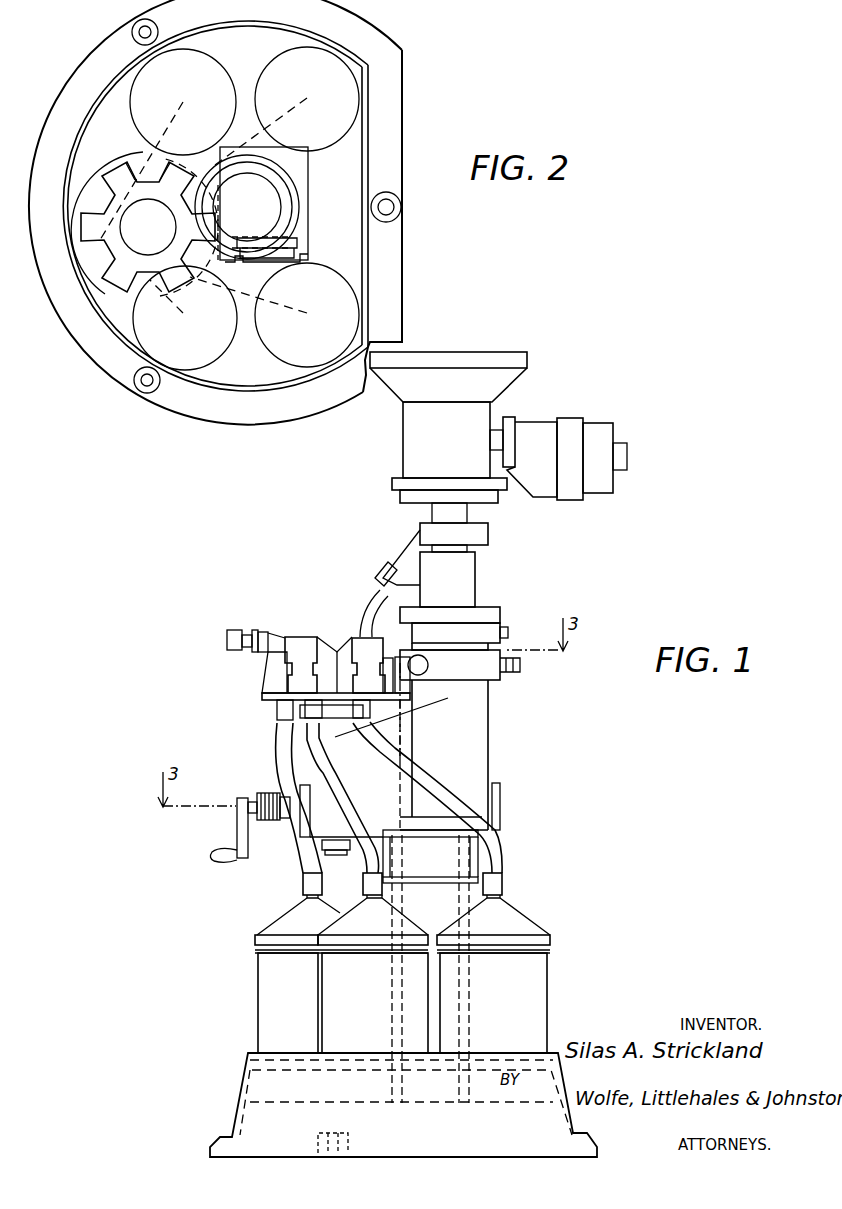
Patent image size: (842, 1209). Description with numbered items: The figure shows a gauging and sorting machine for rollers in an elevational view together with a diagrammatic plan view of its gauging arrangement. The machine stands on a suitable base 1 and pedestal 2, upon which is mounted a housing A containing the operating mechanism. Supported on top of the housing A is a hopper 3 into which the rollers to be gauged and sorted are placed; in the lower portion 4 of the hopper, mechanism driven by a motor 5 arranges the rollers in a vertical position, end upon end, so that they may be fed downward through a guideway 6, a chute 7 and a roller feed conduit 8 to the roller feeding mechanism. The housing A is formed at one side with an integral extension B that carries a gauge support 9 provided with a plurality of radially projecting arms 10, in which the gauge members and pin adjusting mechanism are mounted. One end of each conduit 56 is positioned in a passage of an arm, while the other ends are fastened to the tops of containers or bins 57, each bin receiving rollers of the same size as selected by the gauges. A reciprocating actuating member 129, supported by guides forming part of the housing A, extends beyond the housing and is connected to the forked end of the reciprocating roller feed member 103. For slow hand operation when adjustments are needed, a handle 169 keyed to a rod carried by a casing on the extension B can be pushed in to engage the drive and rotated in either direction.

In FIG. 2, the base 1 is at (385, 92).
In FIG. 1, the base 1 is at (265, 1087).
In FIG. 1, the pedestal 2 is at (445, 900).
In FIG. 1, the hopper 3 is at (440, 378).
In FIG. 1, the lower portion of the hopper 4 is at (415, 433).
In FIG. 1, the motor 5 is at (540, 435).
In FIG. 1, the guideway 6 is at (455, 512).
In FIG. 1, the chute 7 is at (412, 556).
In FIG. 1, the roller feed conduit 8 is at (362, 597).
In FIG. 2, the gauge support 9 is at (100, 247).
In FIG. 1, the gauge support 9 is at (322, 640).
In FIG. 2, the radially projecting arms 10 is at (147, 280).
In FIG. 1, the radially projecting arms 10 is at (286, 640).
In FIG. 2, the conduit 56 is at (283, 115).
In FIG. 1, the conduit 56 is at (290, 782).
In FIG. 2, the containers or bins 57 is at (313, 67).
In FIG. 1, the containers or bins 57 is at (333, 993).
In FIG. 1, the reciprocating roller feed member 103 is at (388, 655).
In FIG. 1, the reciprocating actuating member 129 is at (418, 655).
In FIG. 1, the handle 169 is at (240, 833).
In FIG. 2, the housing A is at (287, 192).
In FIG. 1, the housing A is at (417, 755).
In FIG. 2, the integral extension B is at (266, 261).
In FIG. 1, the integral extension B is at (333, 745).